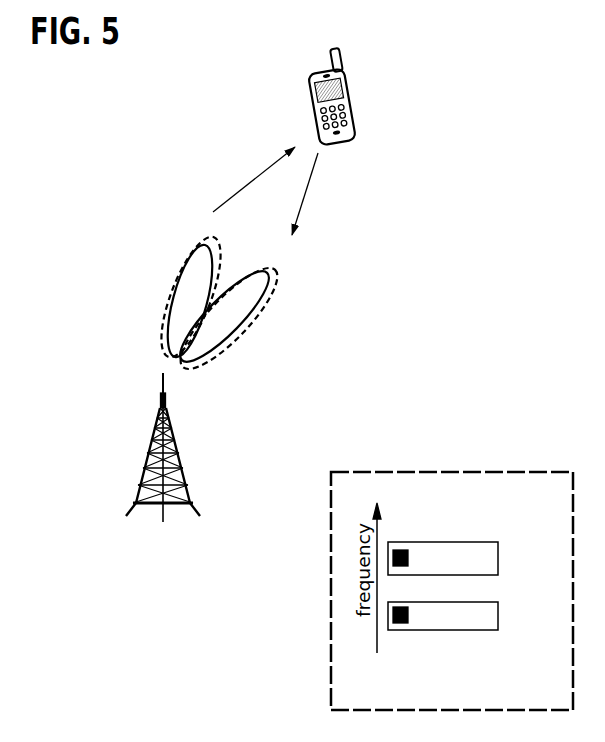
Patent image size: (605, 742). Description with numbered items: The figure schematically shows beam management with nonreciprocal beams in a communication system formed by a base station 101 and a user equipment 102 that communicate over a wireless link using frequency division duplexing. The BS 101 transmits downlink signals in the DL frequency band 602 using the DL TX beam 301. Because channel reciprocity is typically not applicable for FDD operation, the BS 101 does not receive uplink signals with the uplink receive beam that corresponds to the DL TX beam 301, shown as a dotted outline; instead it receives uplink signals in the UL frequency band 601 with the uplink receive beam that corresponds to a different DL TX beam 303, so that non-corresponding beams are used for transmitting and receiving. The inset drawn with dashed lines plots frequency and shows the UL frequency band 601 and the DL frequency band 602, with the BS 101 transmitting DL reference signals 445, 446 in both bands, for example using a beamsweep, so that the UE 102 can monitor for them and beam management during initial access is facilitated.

The base station 101 is at (163, 522).
The user equipment 102 is at (321, 78).
The DL TX beam 301 is at (199, 247).
The DL TX beam 303 is at (265, 272).
The DL reference signals 445 is at (405, 551).
The DL reference signals 446 is at (405, 624).
The UL frequency band 601 is at (499, 549).
The DL frequency band 602 is at (499, 612).